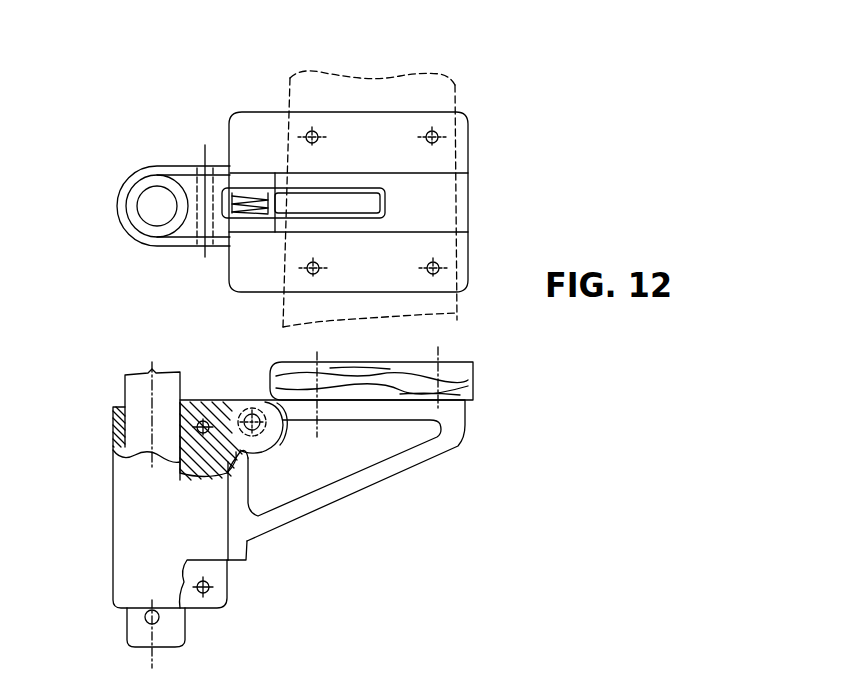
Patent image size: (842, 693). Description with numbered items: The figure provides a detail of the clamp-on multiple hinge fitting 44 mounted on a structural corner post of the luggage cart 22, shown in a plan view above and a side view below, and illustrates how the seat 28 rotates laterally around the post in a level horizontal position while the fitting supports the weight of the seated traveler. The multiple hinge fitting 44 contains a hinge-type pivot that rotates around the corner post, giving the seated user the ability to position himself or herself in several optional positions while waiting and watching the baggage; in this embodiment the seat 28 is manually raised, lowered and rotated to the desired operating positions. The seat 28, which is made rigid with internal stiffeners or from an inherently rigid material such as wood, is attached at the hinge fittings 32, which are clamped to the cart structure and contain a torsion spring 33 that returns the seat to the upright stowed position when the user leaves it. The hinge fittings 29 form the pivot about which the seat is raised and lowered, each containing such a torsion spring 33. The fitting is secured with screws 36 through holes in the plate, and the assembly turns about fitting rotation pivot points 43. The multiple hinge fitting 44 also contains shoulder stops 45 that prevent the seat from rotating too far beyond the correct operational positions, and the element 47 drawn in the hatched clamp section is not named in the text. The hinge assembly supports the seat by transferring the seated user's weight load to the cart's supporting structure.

The luggage cart 22 is at (150, 180).
The seat 28 is at (470, 195).
The hinge fittings 29 is at (138, 242).
The hinge fittings 32 is at (262, 112).
The torsion spring 33 is at (226, 166).
The screws 36 is at (436, 133).
The fitting rotation pivot points 43 is at (248, 400).
The multiple hinge fitting 44 is at (225, 610).
The shoulder stops 45 is at (145, 620).
The clamp block 47 is at (215, 408).